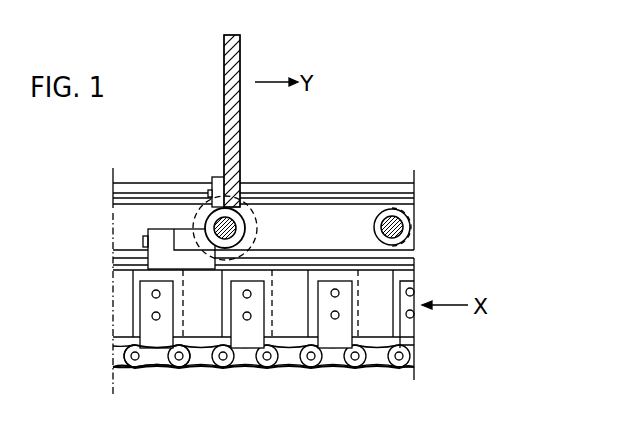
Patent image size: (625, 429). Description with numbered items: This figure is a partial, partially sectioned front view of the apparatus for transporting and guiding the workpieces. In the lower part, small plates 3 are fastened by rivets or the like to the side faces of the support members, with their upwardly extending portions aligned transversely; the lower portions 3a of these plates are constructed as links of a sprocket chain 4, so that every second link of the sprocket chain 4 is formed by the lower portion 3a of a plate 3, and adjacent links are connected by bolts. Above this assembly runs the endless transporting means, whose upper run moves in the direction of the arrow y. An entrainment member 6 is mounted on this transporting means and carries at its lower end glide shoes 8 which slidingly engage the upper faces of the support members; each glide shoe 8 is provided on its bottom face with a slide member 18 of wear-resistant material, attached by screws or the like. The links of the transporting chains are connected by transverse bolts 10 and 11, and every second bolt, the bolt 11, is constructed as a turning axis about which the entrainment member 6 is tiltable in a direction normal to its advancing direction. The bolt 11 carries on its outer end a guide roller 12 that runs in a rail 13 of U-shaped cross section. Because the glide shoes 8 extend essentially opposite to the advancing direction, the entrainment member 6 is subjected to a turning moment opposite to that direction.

The plate 3 is at (148, 309).
The lower portion of the plate 3a is at (159, 360).
The sprocket chain 4 is at (203, 355).
The entrainment member 6 is at (225, 63).
The glide shoe 8 is at (183, 232).
The transverse bolt 10 is at (402, 223).
The transverse bolt (turning axis) 11 is at (240, 227).
The guide roller 12 is at (203, 212).
The rail 13 is at (311, 188).
The slide member 18 is at (167, 257).